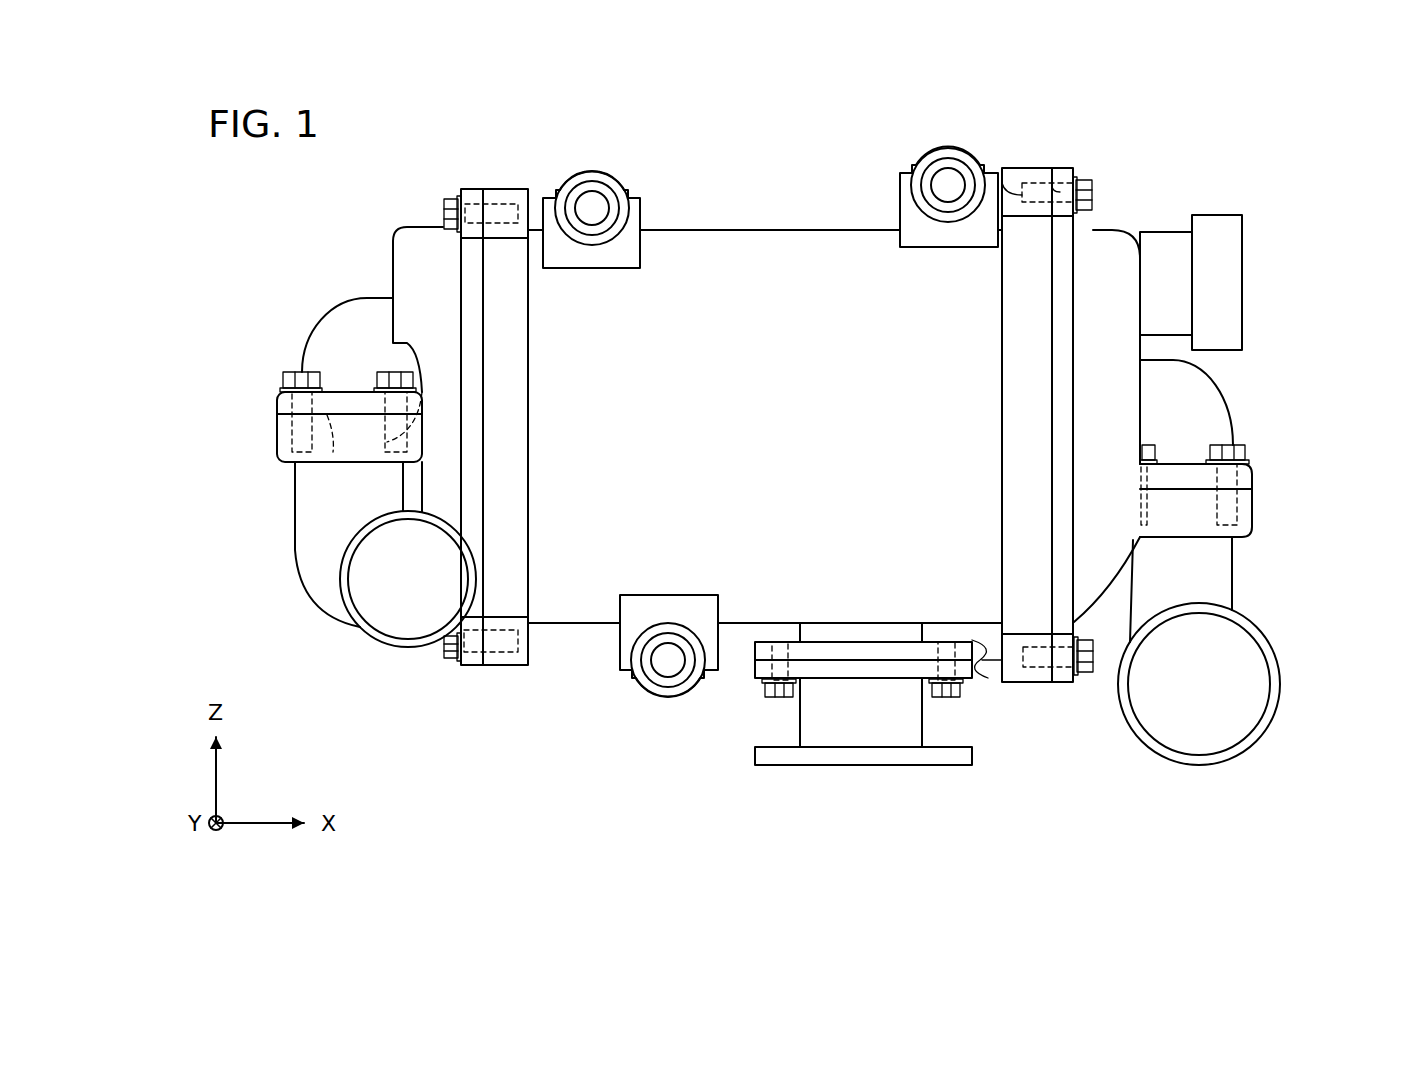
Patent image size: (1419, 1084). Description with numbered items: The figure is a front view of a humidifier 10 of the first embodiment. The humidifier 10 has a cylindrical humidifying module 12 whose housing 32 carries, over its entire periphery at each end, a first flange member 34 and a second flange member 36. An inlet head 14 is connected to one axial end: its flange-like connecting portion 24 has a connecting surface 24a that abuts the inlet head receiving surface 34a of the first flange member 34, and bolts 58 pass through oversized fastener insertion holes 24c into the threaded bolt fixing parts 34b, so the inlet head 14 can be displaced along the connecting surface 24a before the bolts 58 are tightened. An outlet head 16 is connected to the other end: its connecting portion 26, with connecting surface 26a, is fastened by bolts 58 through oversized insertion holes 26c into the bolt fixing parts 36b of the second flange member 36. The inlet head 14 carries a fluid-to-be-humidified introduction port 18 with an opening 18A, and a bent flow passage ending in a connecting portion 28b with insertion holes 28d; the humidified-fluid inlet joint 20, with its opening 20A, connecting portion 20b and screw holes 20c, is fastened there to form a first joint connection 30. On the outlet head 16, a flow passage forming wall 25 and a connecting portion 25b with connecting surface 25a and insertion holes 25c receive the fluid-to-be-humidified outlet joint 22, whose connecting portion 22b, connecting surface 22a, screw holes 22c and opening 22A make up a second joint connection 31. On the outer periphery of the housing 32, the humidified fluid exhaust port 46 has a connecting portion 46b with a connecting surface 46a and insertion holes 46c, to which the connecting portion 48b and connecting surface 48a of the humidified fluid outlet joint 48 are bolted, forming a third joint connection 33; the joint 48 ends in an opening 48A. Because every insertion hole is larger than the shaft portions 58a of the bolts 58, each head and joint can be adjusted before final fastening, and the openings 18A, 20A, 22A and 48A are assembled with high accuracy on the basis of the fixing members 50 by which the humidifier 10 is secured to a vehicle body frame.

The humidifier 10 is at (708, 121).
The humidifying module 12 is at (736, 226).
The inlet head 14 is at (1120, 212).
The outlet head 16 is at (384, 225).
The fluid-to-be-humidified introduction port 18 is at (1166, 230).
The opening 18A is at (1243, 252).
The humidified-fluid inlet joint 20 is at (1234, 578).
The opening 20A is at (1262, 692).
The connecting portion 20b is at (1250, 510).
The screw holes 20c is at (1232, 510).
The fluid-to-be-humidified outlet joint 22 is at (312, 520).
The opening 22A is at (385, 622).
The connecting surface 22a is at (367, 415).
The connecting portion 22b is at (290, 445).
The screw holes 22c is at (420, 440).
The connecting portion 24 is at (1068, 170).
The connecting surface 24a is at (1050, 292).
The fastener insertion holes 24c is at (1075, 205).
The flow passage forming wall 25 is at (360, 307).
The connecting surface 25a is at (365, 440).
The connecting portion 25b is at (290, 410).
The insertion holes 25c is at (333, 456).
The connecting portion 26 is at (470, 272).
The connecting surface 26a is at (487, 190).
The insertion holes 26c is at (460, 190).
The connecting portion 28b is at (1250, 478).
The insertion holes 28d is at (1205, 478).
The first joint connection 30 is at (1345, 460).
The second joint connection 31 is at (195, 388).
The housing 32 is at (855, 246).
The third joint connection 33 is at (1008, 676).
The first flange member 34 is at (1013, 180).
The inlet head receiving surface 34a is at (1060, 172).
The bolt fixing parts 34b is at (1035, 198).
The second flange member 36 is at (514, 190).
The bolt fixing parts 36b is at (505, 222).
The humidified fluid exhaust port 46 is at (922, 636).
The connecting surface 46a is at (858, 655).
The connecting portion 46b is at (896, 640).
The insertion holes 46c is at (946, 650).
The humidified fluid outlet joint 48 is at (923, 722).
The connecting surface 48a is at (826, 650).
The connecting portion 48b is at (890, 665).
The opening 48A is at (865, 755).
The fixing members 50 is at (594, 206).
The bolts 58 is at (443, 204).
The shaft portions 58a is at (531, 202).